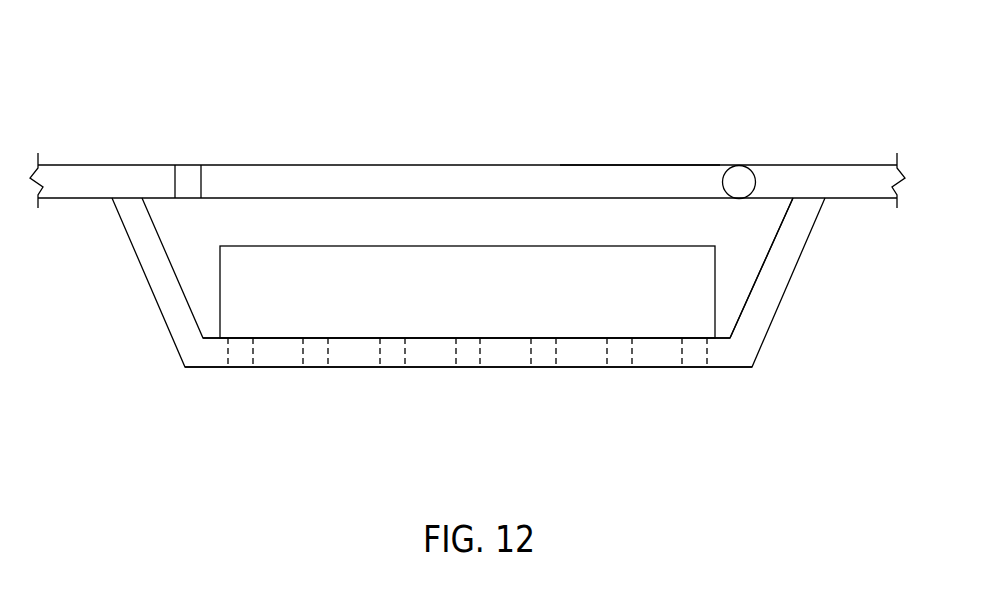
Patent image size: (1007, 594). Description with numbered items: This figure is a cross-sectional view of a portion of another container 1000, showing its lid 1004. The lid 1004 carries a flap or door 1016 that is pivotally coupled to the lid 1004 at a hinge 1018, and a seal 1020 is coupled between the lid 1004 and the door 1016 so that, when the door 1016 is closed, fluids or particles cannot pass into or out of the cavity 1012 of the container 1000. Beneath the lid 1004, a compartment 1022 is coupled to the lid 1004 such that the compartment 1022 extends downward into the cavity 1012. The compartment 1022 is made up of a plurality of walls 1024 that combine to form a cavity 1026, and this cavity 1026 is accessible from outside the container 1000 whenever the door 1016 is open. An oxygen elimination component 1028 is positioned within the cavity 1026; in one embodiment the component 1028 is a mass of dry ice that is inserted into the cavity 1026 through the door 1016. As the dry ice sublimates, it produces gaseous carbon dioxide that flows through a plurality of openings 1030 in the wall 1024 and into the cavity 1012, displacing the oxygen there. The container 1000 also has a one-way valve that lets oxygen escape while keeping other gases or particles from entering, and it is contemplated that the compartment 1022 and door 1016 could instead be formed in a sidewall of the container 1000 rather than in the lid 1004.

The container 1000 is at (164, 68).
The lid 1004 is at (863, 178).
The cavity 1012 is at (525, 444).
The flap or door 1016 is at (660, 180).
The hinge 1018 is at (752, 174).
The seal 1020 is at (187, 177).
The compartment 1022 is at (812, 282).
The walls 1024 is at (760, 322).
The cavity 1026 is at (748, 235).
The oxygen elimination component 1028 is at (492, 303).
The openings 1030 is at (383, 378).